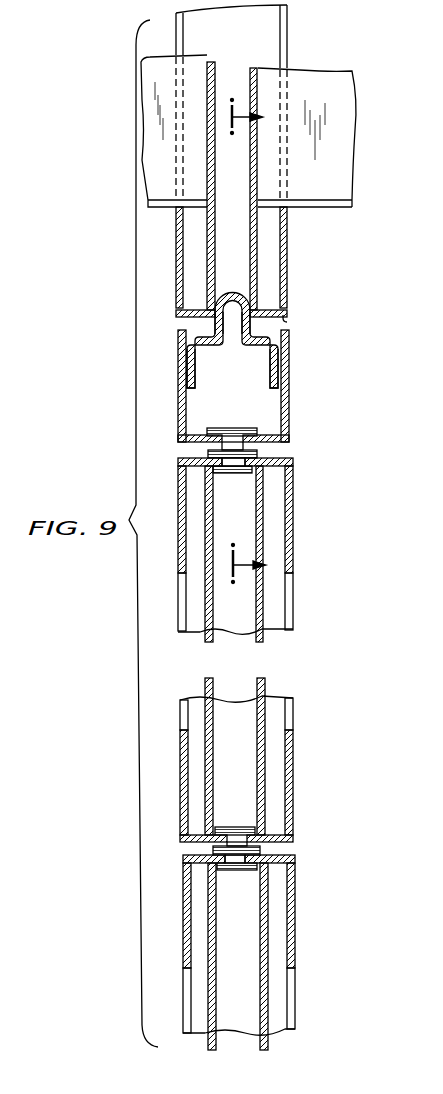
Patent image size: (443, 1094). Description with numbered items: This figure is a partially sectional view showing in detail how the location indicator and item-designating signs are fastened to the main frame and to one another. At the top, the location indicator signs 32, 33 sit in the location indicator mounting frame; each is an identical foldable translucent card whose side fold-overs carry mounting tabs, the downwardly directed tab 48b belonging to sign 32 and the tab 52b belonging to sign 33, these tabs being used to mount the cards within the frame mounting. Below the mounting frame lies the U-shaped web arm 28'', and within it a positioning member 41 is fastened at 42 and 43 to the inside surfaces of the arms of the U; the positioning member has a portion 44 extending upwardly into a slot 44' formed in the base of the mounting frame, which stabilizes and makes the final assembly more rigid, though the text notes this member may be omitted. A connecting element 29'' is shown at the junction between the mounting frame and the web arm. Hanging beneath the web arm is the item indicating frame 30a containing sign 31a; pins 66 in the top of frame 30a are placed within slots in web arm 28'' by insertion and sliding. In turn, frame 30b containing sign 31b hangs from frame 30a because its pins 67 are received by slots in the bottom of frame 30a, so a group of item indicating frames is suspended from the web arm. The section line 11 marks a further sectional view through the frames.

The section line 11- 11 is at (262, 341).
The web arm 28'' is at (293, 386).
The connecting member 29'' is at (318, 322).
The frame 30a is at (293, 490).
The frame 30b is at (295, 910).
The sign 31a is at (263, 528).
The sign 31b is at (213, 940).
The location indicator sign 32 is at (153, 162).
The location indicator sign 33 is at (345, 130).
The positioning member 41 is at (215, 322).
The fastening point 42 is at (178, 366).
The fastening point 43 is at (287, 365).
The upwardly extending portion 44 is at (259, 324).
The slot 44' is at (295, 309).
The downwardly directed tab 48b is at (215, 246).
The tab 52b is at (257, 233).
The pins 66 is at (258, 453).
The pins 67 is at (260, 852).